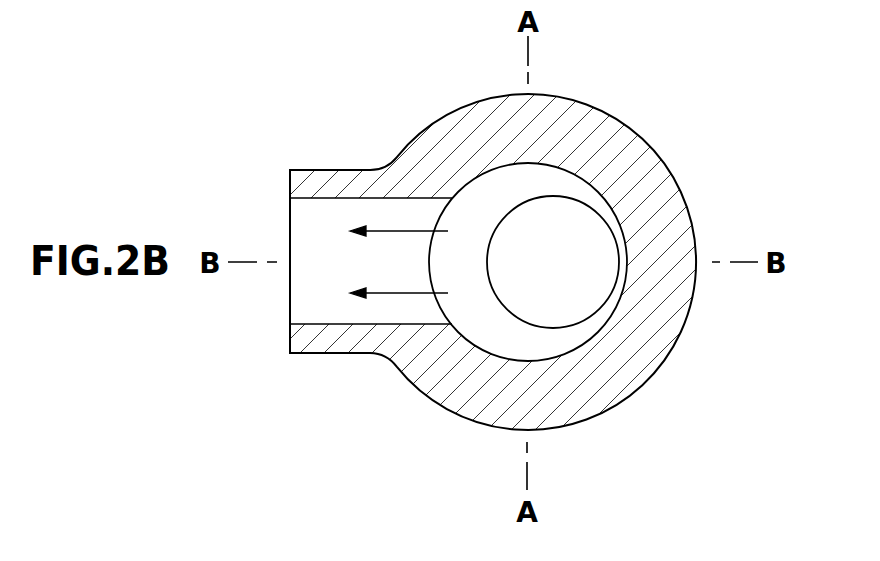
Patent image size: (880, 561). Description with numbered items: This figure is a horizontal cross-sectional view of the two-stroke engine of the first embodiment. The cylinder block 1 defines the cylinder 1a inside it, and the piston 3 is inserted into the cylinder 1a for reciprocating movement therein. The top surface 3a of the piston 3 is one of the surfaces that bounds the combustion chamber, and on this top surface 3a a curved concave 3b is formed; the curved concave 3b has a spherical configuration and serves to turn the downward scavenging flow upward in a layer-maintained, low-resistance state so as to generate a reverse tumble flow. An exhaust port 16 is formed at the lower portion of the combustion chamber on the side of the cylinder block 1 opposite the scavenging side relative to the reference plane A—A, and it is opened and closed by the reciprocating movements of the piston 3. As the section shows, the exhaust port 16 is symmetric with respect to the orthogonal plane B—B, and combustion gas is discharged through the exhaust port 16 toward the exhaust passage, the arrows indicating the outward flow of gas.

The cylinder block 1 is at (664, 178).
The cylinder 1a is at (548, 165).
The piston 3 is at (537, 259).
The top surface of the piston 3a is at (545, 343).
The curved concave 3b is at (511, 290).
The exhaust port 16 is at (305, 302).